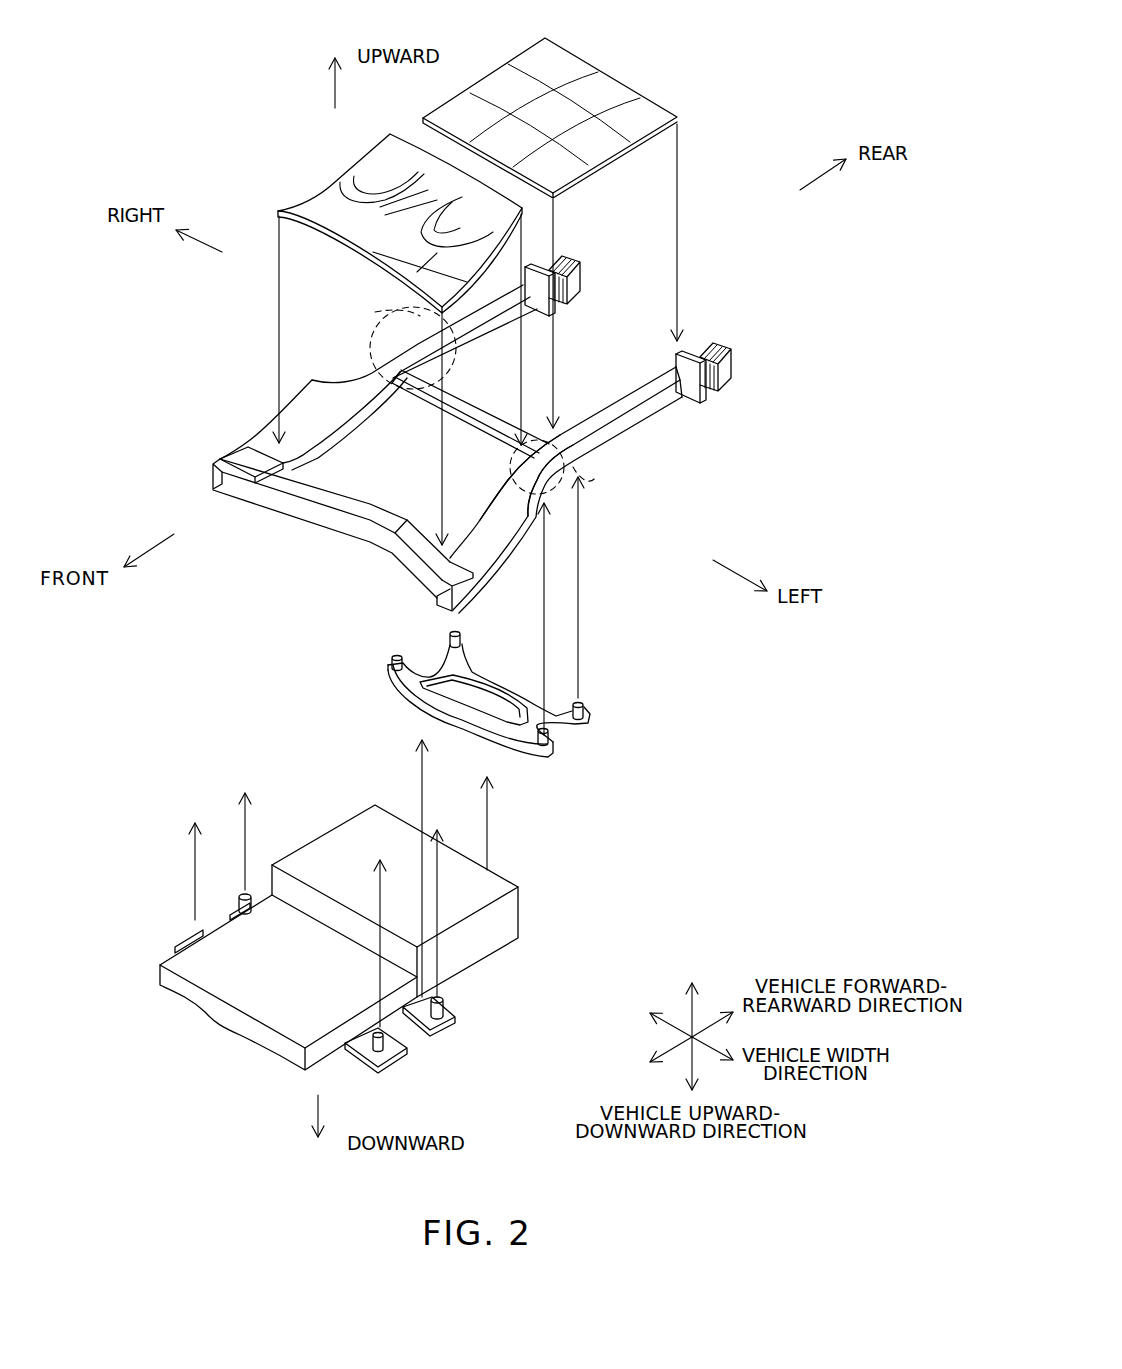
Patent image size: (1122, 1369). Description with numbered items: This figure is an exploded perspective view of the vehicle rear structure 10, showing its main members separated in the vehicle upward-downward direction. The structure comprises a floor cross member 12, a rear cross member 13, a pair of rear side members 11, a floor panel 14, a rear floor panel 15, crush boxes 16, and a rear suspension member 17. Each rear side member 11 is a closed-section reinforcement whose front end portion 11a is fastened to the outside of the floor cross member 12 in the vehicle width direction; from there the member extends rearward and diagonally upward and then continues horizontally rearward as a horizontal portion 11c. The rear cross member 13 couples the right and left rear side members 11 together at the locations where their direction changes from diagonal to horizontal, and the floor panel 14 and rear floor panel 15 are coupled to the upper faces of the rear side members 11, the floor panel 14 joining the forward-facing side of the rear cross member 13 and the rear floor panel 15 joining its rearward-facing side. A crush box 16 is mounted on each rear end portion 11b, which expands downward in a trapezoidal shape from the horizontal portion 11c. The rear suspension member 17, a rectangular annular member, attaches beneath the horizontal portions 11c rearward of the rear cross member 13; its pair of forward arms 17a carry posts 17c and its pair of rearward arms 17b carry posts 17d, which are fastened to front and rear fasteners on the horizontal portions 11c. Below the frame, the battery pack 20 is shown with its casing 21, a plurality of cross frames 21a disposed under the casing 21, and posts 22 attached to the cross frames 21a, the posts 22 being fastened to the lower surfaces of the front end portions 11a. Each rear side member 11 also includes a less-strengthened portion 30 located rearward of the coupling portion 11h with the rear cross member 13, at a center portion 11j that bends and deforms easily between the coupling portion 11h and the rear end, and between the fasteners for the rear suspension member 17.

The vehicle rear structure 10 is at (768, 292).
The rear side member 11 is at (650, 417).
The front end portion 11a is at (479, 588).
The rear end portion 11b is at (686, 397).
The horizontal portion 11c is at (612, 425).
The center portion 11j is at (550, 480).
The coupling portion 11h is at (372, 378).
The floor cross member 12 is at (322, 498).
The rear cross member 13 is at (488, 448).
The floor panel 14 is at (337, 197).
The rear floor panel 15 is at (641, 106).
The crush box 16 is at (712, 352).
The rear suspension member 17 is at (577, 733).
The forward arm 17a is at (513, 753).
The rearward arm 17b is at (547, 718).
The post 17c is at (542, 753).
The post 17d is at (585, 711).
The battery pack 20 is at (421, 939).
The casing 21 is at (512, 950).
The cross frame 21a is at (452, 1020).
The post 22 is at (446, 1003).
The less-strengthened portion 30 is at (375, 312).